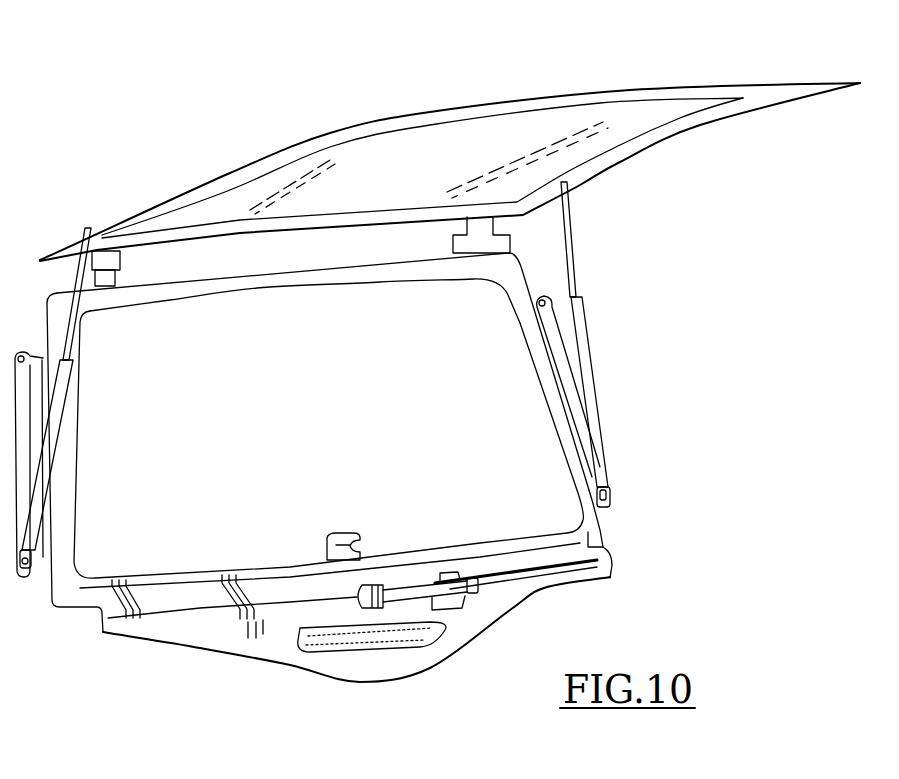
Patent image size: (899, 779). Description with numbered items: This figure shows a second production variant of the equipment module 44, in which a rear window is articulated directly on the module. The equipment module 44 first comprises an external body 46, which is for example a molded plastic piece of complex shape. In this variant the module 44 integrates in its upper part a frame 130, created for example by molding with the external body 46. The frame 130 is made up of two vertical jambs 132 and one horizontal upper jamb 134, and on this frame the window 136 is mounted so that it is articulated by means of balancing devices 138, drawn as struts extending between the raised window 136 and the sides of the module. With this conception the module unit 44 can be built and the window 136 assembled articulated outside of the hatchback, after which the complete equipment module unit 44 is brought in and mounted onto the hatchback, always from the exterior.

The equipment module 44 is at (650, 488).
The external body 46 is at (196, 650).
The frame 130 is at (530, 277).
The vertical jambs 132 is at (60, 521).
The horizontal upper jamb 134 is at (193, 290).
The window 136 is at (566, 86).
The balancing devices 138 is at (58, 392).